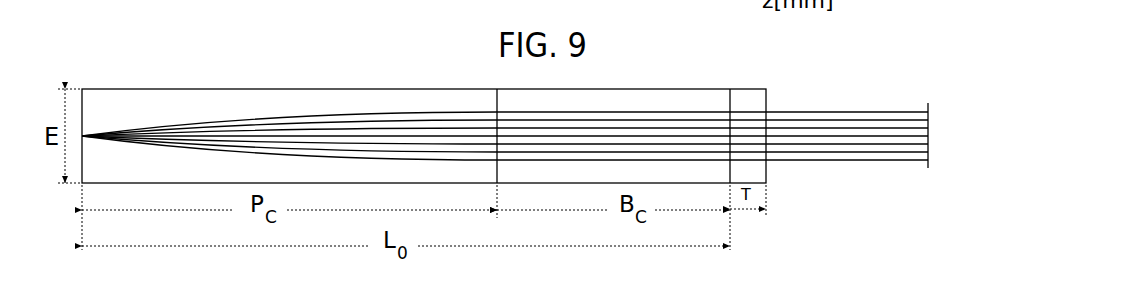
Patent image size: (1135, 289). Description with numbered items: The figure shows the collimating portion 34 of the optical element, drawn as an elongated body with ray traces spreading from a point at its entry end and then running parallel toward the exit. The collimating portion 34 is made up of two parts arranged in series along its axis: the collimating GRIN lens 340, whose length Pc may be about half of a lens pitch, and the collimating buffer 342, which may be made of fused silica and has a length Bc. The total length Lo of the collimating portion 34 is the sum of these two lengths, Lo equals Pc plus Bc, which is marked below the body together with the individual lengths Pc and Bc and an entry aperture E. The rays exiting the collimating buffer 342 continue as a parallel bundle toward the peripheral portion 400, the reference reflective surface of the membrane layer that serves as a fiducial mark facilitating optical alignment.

The collimating portion 34 is at (200, 70).
The collimating GRIN lens 340 is at (333, 96).
The collimating buffer 342 is at (638, 95).
The peripheral portion 400 is at (927, 104).